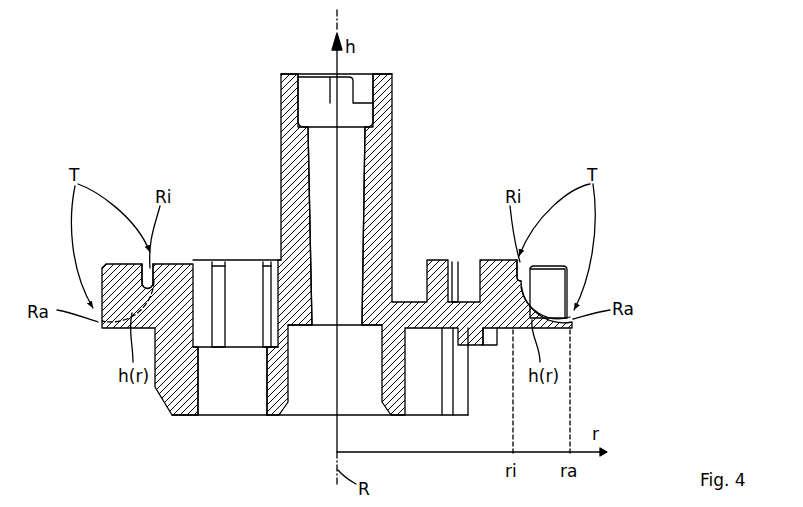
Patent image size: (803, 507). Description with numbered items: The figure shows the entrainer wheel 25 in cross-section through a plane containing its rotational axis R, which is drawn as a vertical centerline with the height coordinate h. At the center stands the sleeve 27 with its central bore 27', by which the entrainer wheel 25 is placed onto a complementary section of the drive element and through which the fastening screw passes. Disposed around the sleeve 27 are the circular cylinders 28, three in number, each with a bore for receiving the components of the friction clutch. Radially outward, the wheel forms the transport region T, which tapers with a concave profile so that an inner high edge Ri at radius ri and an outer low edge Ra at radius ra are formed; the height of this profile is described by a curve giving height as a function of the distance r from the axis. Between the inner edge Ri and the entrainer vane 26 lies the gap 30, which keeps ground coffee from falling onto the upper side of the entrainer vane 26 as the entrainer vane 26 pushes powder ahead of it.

The entrainer wheel 25 is at (449, 147).
The entrainer vane 26 is at (102, 267).
The sleeve 27 is at (372, 244).
The central bore 27' is at (301, 226).
The circular cylinder 28 is at (238, 348).
The gap 30 is at (147, 266).